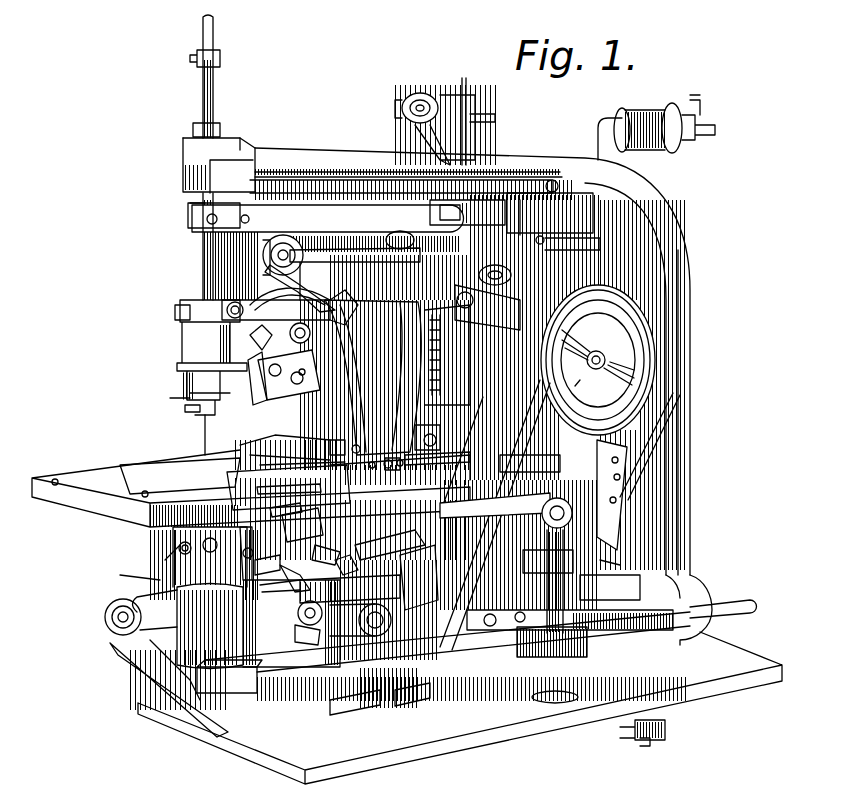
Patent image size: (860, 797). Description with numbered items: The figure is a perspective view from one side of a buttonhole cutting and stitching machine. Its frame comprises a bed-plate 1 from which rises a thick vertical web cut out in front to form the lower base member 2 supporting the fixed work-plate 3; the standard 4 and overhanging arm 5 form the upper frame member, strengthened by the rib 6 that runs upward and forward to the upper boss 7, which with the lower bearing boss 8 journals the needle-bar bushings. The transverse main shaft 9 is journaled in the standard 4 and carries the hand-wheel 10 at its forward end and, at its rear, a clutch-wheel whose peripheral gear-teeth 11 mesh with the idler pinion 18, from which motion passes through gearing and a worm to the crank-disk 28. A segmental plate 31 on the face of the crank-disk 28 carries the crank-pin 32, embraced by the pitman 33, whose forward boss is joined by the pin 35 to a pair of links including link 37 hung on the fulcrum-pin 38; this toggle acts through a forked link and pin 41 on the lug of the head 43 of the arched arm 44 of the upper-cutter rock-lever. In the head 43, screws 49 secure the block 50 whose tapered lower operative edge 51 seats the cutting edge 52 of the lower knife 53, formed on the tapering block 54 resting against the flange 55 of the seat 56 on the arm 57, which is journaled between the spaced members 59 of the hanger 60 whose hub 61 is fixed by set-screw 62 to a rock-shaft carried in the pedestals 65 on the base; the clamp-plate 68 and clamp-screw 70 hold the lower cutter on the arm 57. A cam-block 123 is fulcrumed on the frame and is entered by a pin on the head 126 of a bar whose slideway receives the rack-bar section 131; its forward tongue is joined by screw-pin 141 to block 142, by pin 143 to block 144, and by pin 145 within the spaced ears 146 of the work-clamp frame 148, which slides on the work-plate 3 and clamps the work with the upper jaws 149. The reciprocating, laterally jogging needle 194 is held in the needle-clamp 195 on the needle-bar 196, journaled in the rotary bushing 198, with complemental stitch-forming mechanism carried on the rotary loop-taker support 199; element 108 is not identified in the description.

The bed-plate 1 is at (460, 698).
The lower base member 2 is at (256, 598).
The work-plate 3 is at (251, 488).
The standard 4 is at (560, 518).
The overhanging arm 5 is at (690, 466).
The rib 6 is at (335, 158).
The upper boss 7 is at (222, 162).
The lower bearing boss 8 is at (208, 357).
The main or driving shaft 9 is at (600, 357).
The hand-wheel 10 is at (573, 379).
The peripheral gear-teeth 11 is at (400, 440).
The idler pinion 18 is at (656, 742).
The crank-disk 28 is at (505, 213).
The segmental plate 31 is at (540, 228).
The crank-pin 32 is at (548, 242).
The pitman 33 is at (528, 236).
The pin 35 is at (300, 288).
The link 37 is at (290, 297).
The fulcrum-pin 38 is at (283, 255).
The pin 41 is at (305, 345).
The head 43 is at (264, 346).
The arm 44 is at (290, 306).
The screws 49 is at (289, 375).
The block 50 is at (306, 374).
The lower operative edge 51 is at (254, 383).
The cutting edge 52 is at (286, 518).
The lower knife 53 is at (302, 529).
The block 54 is at (294, 578).
The flange 55 is at (264, 567).
The seat 56 is at (325, 557).
The arm 57 is at (390, 546).
The spaced members 59 is at (416, 577).
The hanger 60 is at (350, 589).
The hub 61 is at (313, 612).
The set-screw 62 is at (297, 637).
The pedestals 65 is at (366, 620).
The clamp-plate 68 is at (280, 586).
The clamp-screw 70 is at (346, 564).
The screw 108 is at (247, 543).
The cam-block 123 is at (431, 421).
The head 126 is at (434, 426).
The rack-bar section 131 is at (395, 458).
The screw-pin 141 is at (437, 466).
The block 142 is at (388, 460).
The pin 143 is at (355, 447).
The block 144 is at (404, 470).
The pin 145 is at (377, 472).
The spaced ears 146 is at (553, 457).
The work-clamp frame 148 is at (400, 469).
The upper jaws 149 is at (210, 462).
The needle 194 is at (204, 430).
The needle-clamp 195 is at (185, 413).
The needle-bar 196 is at (203, 264).
The rotary bushing 198 is at (186, 326).
The loop-taker support 199 is at (180, 566).